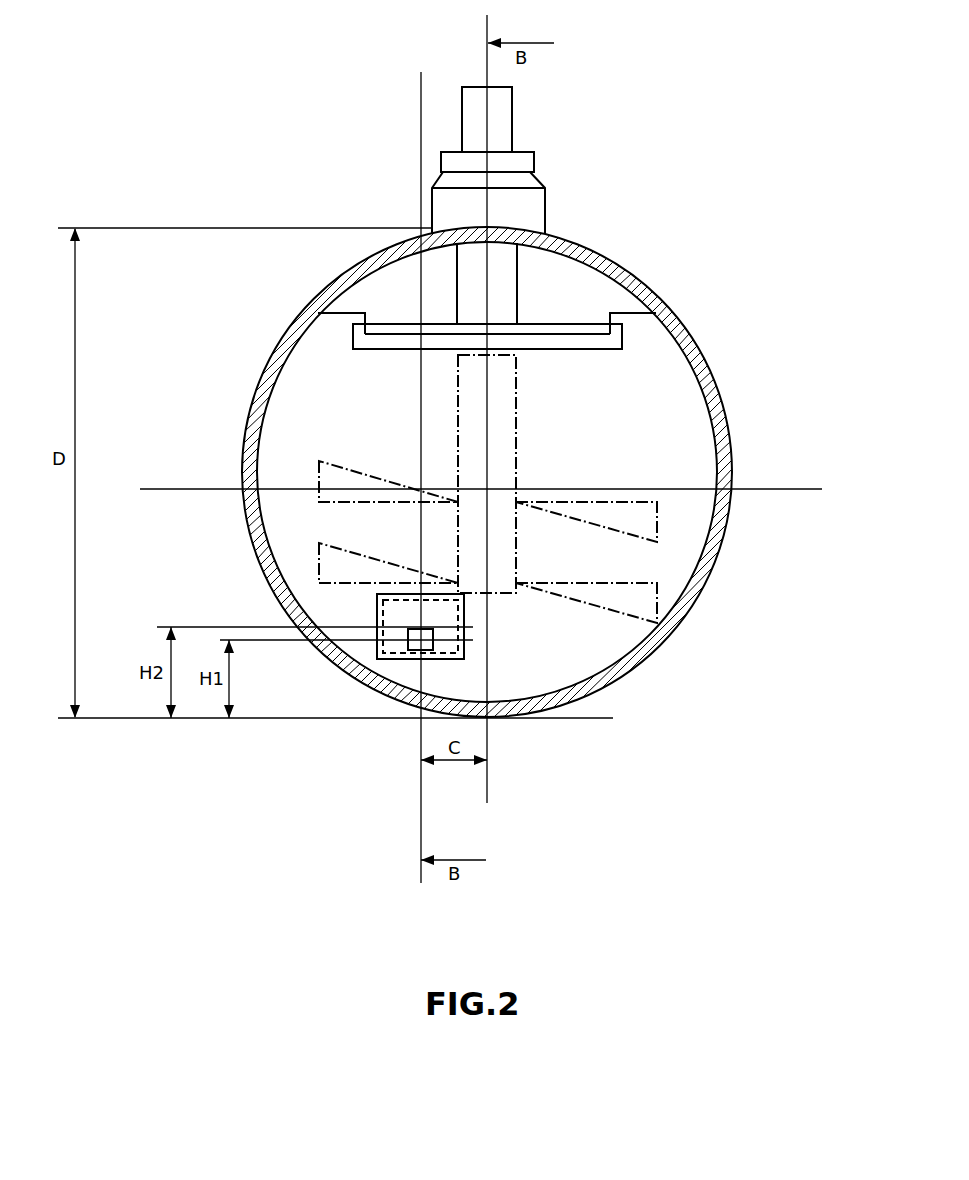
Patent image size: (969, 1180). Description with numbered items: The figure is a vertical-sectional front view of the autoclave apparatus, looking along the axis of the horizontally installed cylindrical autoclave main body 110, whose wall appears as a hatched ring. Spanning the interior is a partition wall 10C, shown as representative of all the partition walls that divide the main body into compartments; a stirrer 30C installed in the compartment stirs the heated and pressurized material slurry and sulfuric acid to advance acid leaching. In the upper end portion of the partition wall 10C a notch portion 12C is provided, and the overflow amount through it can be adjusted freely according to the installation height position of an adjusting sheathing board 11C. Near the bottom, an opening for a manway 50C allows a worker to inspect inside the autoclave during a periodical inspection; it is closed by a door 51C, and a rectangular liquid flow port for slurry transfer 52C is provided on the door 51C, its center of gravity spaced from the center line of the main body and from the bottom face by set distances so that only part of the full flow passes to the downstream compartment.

The partition wall 10C is at (536, 472).
The autoclave main body 110 is at (723, 527).
The adjusting sheathing board 11C is at (410, 333).
The notch portion 12C is at (587, 320).
The stirrer 30C is at (512, 290).
The opening for a manway 50C is at (468, 660).
The door 51C is at (450, 610).
The liquid flow port for slurry transfer 52C is at (433, 645).